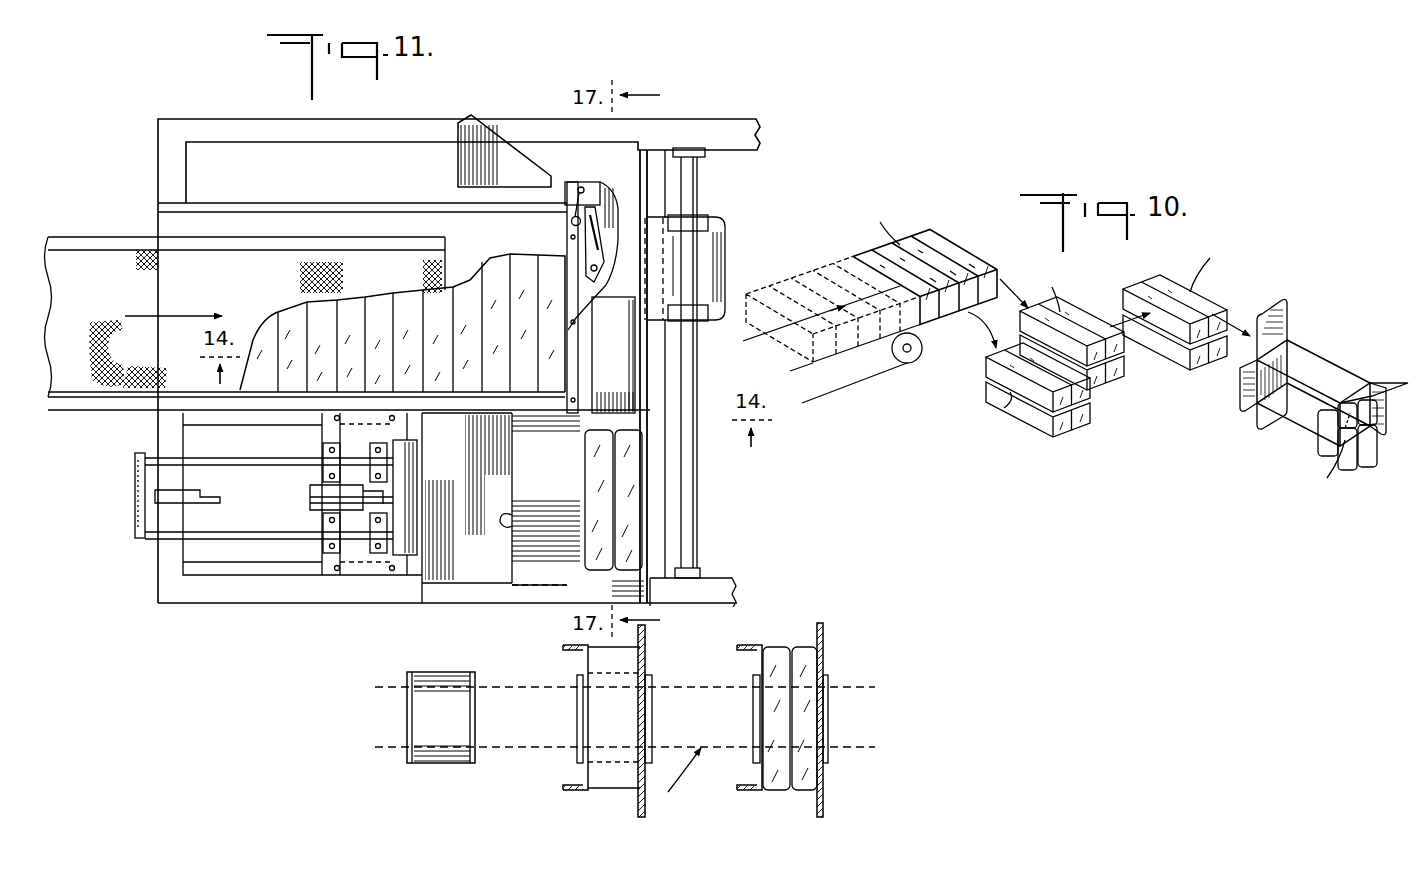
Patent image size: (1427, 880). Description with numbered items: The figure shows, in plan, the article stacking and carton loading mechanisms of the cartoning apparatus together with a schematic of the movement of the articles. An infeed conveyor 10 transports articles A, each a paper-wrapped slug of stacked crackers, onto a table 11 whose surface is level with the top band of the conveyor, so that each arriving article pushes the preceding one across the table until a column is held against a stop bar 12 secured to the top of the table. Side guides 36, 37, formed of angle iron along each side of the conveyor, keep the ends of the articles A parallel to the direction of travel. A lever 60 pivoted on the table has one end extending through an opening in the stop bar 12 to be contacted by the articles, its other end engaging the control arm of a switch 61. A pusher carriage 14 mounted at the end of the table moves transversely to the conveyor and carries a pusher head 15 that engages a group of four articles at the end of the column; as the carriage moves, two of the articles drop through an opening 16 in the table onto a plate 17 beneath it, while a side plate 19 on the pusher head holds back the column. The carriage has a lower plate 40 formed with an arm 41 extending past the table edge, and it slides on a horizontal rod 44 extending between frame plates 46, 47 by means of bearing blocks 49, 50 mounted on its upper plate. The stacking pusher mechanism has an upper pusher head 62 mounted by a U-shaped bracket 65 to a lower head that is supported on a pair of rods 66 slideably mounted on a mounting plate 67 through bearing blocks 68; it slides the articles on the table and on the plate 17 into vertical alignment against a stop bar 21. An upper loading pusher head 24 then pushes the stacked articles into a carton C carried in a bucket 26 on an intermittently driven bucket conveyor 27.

In FIG. 11, the infeed conveyor 10 is at (232, 290).
In FIG. 10, the infeed conveyor 10 is at (880, 372).
In FIG. 11, the table 11 is at (552, 459).
In FIG. 10, the table 11 is at (940, 325).
In FIG. 11, the stop bar 12 is at (579, 357).
In FIG. 11, the pusher carriage 14 is at (728, 242).
In FIG. 11, the pusher head 15 is at (492, 145).
In FIG. 11, the opening 16 is at (502, 513).
In FIG. 11, the plate 17 is at (468, 497).
In FIG. 10, the plate 17 is at (1080, 438).
In FIG. 11, the side plate 19 is at (458, 168).
In FIG. 11, the stop bar 21 is at (650, 452).
In FIG. 11, the upper loading pusher head 24 is at (625, 400).
In FIG. 10, the bucket 26 is at (447, 750).
In FIG. 10, the bucket conveyor 27 is at (678, 780).
In FIG. 11, the side guide 36 is at (118, 247).
In FIG. 11, the side guide 37 is at (150, 398).
In FIG. 11, the lower plate 40 is at (630, 308).
In FIG. 11, the arm 41 is at (722, 270).
In FIG. 11, the rod 44 is at (694, 200).
In FIG. 11, the frame plate 46 is at (700, 572).
In FIG. 11, the frame plate 47 is at (690, 150).
In FIG. 11, the bearing block 49 is at (705, 312).
In FIG. 11, the bearing block 50 is at (702, 222).
In FIG. 11, the lever 60 is at (584, 290).
In FIG. 11, the switch 61 is at (588, 182).
In FIG. 11, the upper pusher head 62 is at (405, 480).
In FIG. 11, the U-shaped bracket 65 is at (305, 498).
In FIG. 11, the rods 66 is at (227, 532).
In FIG. 11, the mounting plate 67 is at (323, 562).
In FIG. 11, the bearing blocks 68 is at (380, 443).
In FIG. 11, the article A is at (622, 477).
In FIG. 10, the article A is at (1108, 351).
In FIG. 10, the carton C is at (1316, 368).